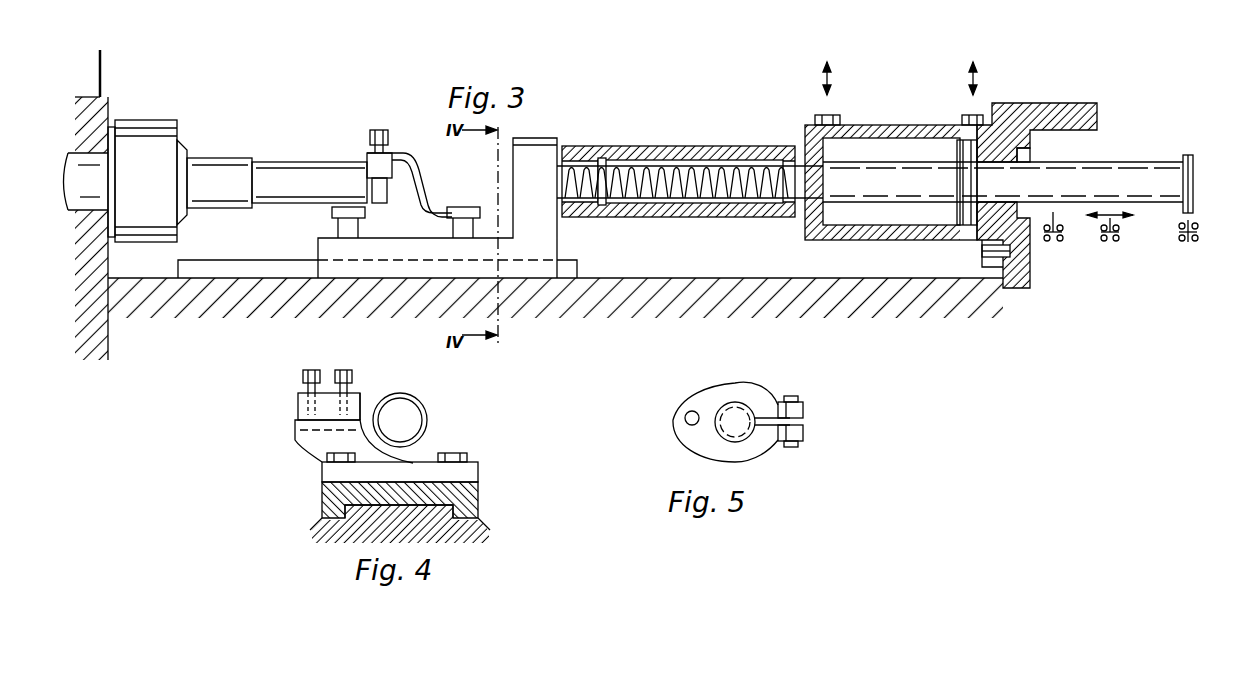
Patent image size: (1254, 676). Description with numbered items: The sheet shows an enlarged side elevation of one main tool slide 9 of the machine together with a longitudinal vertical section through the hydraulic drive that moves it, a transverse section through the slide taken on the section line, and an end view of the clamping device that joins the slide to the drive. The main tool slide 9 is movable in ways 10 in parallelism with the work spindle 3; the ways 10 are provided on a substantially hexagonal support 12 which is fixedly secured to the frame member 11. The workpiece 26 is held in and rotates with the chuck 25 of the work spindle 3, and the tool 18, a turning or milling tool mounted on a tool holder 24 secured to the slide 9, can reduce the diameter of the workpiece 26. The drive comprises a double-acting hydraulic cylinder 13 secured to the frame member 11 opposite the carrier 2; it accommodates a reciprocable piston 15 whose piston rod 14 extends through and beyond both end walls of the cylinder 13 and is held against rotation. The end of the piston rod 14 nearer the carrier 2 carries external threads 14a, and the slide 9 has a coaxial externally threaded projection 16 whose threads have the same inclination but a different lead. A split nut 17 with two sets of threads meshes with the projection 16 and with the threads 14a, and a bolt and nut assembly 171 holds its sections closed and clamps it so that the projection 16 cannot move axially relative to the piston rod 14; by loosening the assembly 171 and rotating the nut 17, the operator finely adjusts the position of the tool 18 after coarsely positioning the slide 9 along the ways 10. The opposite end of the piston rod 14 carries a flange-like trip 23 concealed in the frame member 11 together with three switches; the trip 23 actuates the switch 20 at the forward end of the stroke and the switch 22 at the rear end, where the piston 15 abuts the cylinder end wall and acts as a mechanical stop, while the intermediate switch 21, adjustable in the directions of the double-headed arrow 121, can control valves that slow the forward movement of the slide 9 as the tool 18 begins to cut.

In FIG. 3, the carrier 2 is at (97, 335).
In FIG. 3, the work spindle 3 is at (102, 168).
In FIG. 3, the main tool slide 9 is at (415, 268).
In FIG. 4, the main tool slide 9 is at (470, 496).
In FIG. 3, the ways 10 is at (238, 268).
In FIG. 3, the frame member 11 is at (1037, 107).
In FIG. 3, the support 12 is at (905, 290).
In FIG. 4, the support 12 is at (365, 525).
In FIG. 3, the hydraulic cylinder 13 is at (880, 232).
In FIG. 3, the piston rod 14 is at (845, 178).
In FIG. 3, the external threads 14a is at (736, 173).
In FIG. 3, the piston 15 is at (965, 227).
In FIG. 3, the externally threaded projection 16 is at (585, 172).
In FIG. 3, the split nut 17 is at (683, 150).
In FIG. 5, the split nut 17 is at (745, 450).
In FIG. 5, the bolt and nut assembly 171 is at (795, 447).
In FIG. 3, the tool 18 is at (369, 170).
In FIG. 4, the tool 18 is at (365, 420).
In FIG. 3, the switch 20 is at (1054, 246).
In FIG. 3, the intermediate switch 21 is at (1110, 246).
In FIG. 3, the switch 22 is at (1190, 246).
In FIG. 3, the trip 23 is at (1188, 155).
In FIG. 3, the tool holder 24 is at (418, 203).
In FIG. 4, the tool holder 24 is at (313, 450).
In FIG. 3, the chuck 25 is at (160, 135).
In FIG. 3, the workpiece 26 is at (298, 174).
In FIG. 4, the workpiece 26 is at (412, 414).
In FIG. 3, the double-headed arrow 121 is at (1111, 213).